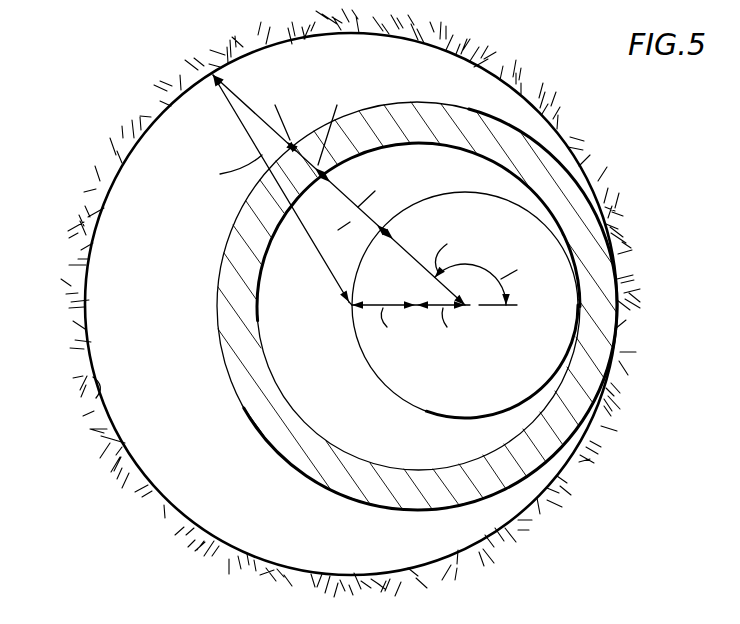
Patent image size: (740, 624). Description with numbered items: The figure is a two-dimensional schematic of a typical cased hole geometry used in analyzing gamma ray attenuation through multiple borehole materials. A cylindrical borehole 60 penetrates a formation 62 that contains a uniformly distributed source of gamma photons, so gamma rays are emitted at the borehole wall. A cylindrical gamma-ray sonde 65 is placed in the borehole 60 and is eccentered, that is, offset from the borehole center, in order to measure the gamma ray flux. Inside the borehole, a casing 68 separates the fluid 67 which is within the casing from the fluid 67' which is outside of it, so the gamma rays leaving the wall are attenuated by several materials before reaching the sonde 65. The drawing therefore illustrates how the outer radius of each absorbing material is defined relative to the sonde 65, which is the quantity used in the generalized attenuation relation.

The borehole 60 is at (83, 406).
The formation 62 is at (624, 132).
The gamma-ray sonde 65 is at (487, 192).
The borehole fluid within the casing 67 is at (395, 246).
The fluid outside the casing 67' is at (248, 216).
The casing 68 is at (540, 447).